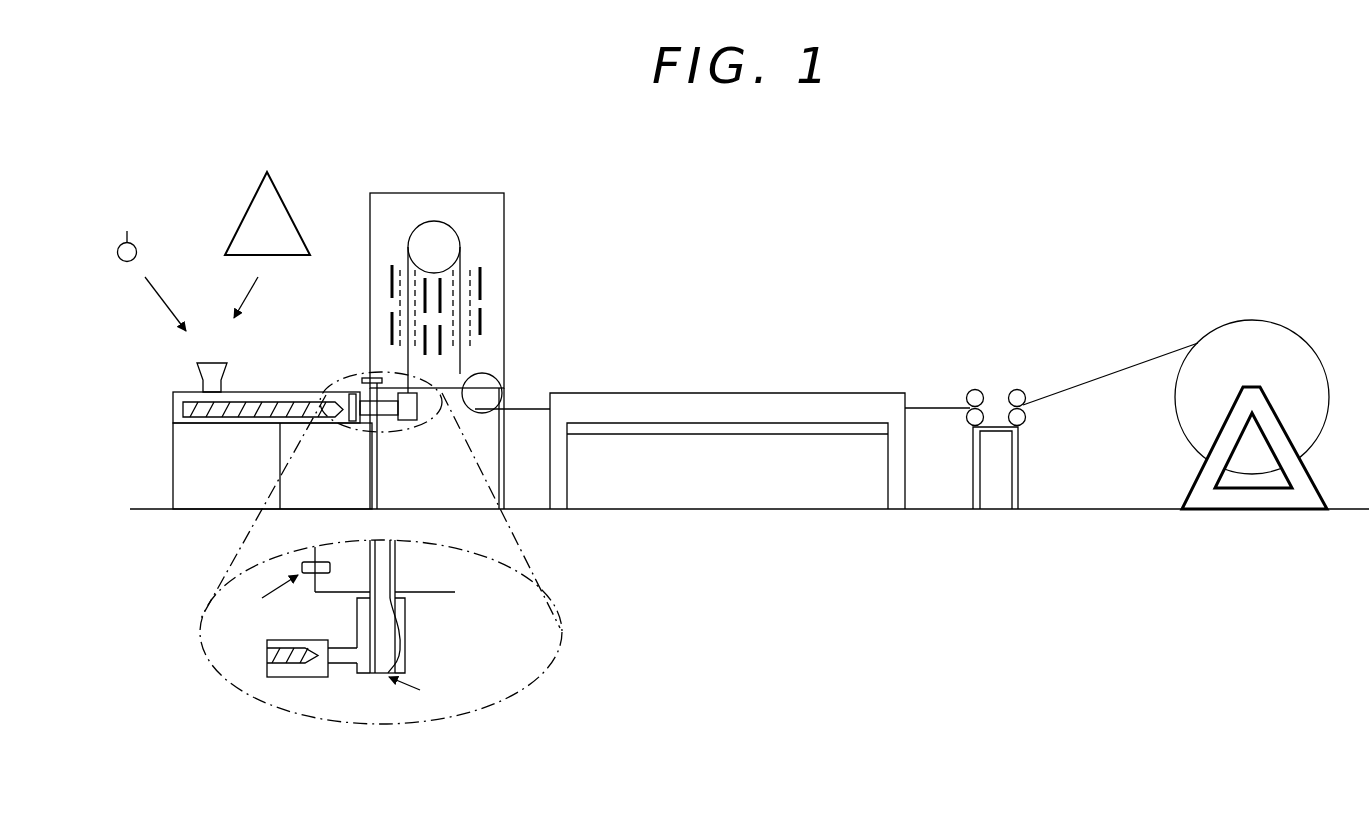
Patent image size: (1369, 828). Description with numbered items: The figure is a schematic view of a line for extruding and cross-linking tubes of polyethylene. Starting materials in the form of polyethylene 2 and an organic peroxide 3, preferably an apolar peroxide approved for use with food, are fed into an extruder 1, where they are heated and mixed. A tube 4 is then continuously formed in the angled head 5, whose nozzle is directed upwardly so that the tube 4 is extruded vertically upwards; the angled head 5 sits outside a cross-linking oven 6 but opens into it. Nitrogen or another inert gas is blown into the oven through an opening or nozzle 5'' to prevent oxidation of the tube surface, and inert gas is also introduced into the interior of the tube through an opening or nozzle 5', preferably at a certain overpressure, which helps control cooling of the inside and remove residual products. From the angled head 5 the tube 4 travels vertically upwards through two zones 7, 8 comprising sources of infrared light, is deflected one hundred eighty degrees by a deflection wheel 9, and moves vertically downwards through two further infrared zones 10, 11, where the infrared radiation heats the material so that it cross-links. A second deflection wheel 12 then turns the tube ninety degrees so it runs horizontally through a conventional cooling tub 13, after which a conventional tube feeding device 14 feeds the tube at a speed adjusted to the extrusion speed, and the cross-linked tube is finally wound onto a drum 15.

The extruder 1 is at (173, 462).
The polyethylene 2 is at (237, 227).
The organic peroxide 3 is at (125, 241).
The tube 4 is at (406, 372).
The angled head 5 is at (354, 626).
The opening or nozzle 5' is at (367, 692).
The opening or nozzle 5'' is at (298, 545).
The cross-linking oven 6 is at (400, 193).
The zone 7 is at (378, 283).
The zone 8 is at (390, 322).
The deflection wheel 9 is at (443, 228).
The zone 10 is at (480, 277).
The zone 11 is at (480, 330).
The second deflection wheel 12 is at (480, 408).
The cooling tub 13 is at (727, 393).
The tube feeding device 14 is at (1000, 392).
The drum 15 is at (1303, 338).